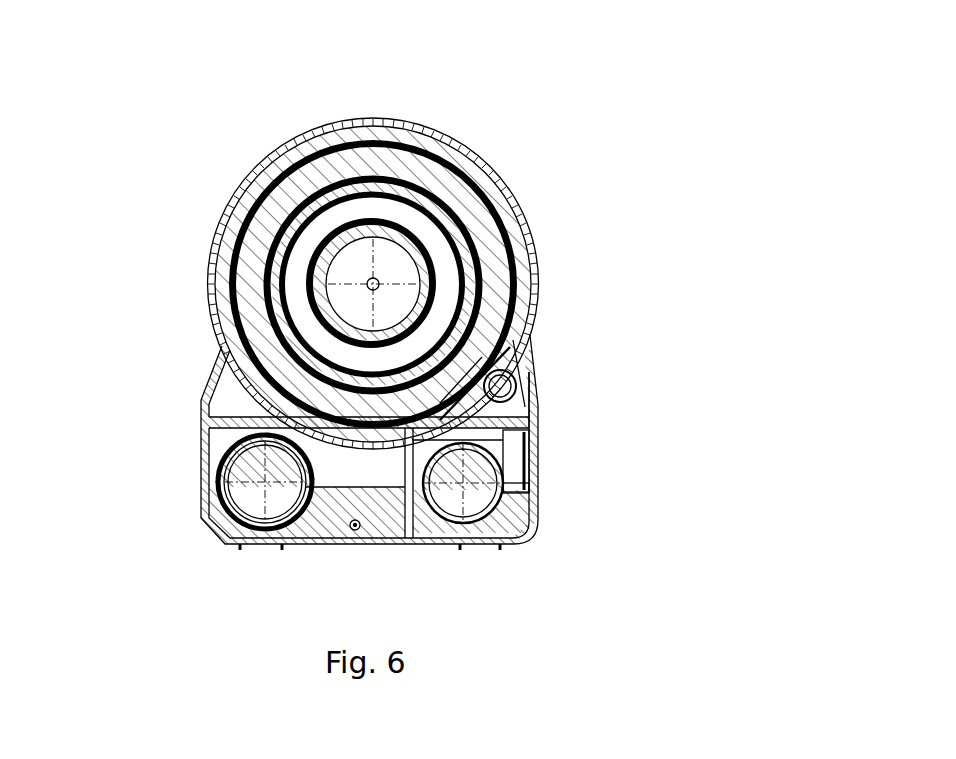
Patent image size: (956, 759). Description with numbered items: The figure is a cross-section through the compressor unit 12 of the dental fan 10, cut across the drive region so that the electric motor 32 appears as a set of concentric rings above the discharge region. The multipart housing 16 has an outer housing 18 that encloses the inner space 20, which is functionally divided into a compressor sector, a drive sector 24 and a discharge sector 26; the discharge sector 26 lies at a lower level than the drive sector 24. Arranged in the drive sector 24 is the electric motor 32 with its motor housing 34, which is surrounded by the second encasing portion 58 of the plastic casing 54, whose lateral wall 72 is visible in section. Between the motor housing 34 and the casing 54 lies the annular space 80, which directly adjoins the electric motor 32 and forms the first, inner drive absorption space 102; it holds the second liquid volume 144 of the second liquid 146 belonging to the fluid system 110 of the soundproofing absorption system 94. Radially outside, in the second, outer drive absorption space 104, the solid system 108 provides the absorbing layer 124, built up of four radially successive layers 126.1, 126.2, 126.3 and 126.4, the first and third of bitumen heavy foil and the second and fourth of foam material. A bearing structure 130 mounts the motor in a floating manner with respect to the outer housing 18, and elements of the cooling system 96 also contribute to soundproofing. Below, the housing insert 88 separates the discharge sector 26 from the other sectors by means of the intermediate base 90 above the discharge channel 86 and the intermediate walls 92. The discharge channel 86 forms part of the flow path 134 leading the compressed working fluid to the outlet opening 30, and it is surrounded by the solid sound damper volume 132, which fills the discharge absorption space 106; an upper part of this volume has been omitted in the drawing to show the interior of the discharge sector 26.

The fan 10 is at (185, 100).
The compressor unit 12 is at (567, 340).
The housing 16 is at (198, 412).
The outer housing 18 is at (290, 474).
The inner space 20 is at (217, 497).
The drive sector 24 is at (405, 140).
The discharge sector 26 is at (506, 512).
The outlet opening 30 is at (473, 540).
The electric motor 32 is at (470, 240).
The motor housing 34 is at (398, 272).
The casing 54 is at (333, 183).
The second encasing portion 58 is at (391, 162).
The lateral wall 72 is at (315, 160).
The annular space 80 is at (322, 226).
The discharge channel 86 is at (452, 495).
The housing insert 88 is at (522, 458).
The intermediate base 90 is at (518, 427).
The intermediate walls 92 is at (385, 540).
The soundproofing absorption system 94 is at (500, 126).
The cooling system 96 is at (552, 182).
The first, inner drive absorption space 102 is at (297, 273).
The second, outer drive absorption space 104 is at (233, 298).
The discharge absorption space 106 is at (522, 480).
The solid system 108 is at (490, 342).
The fluid system 110 is at (237, 188).
The absorbing layer 124 is at (515, 197).
The first layer 126.1 is at (482, 163).
The second layer 126.2 is at (424, 142).
The third layer 126.3 is at (282, 168).
The fourth layer 126.4 is at (290, 143).
The bearing structure 130 is at (518, 387).
The sound damper volume 132 is at (513, 542).
The flow path 134 is at (250, 546).
The second liquid volume 144 is at (450, 303).
The second liquid 146 is at (222, 340).